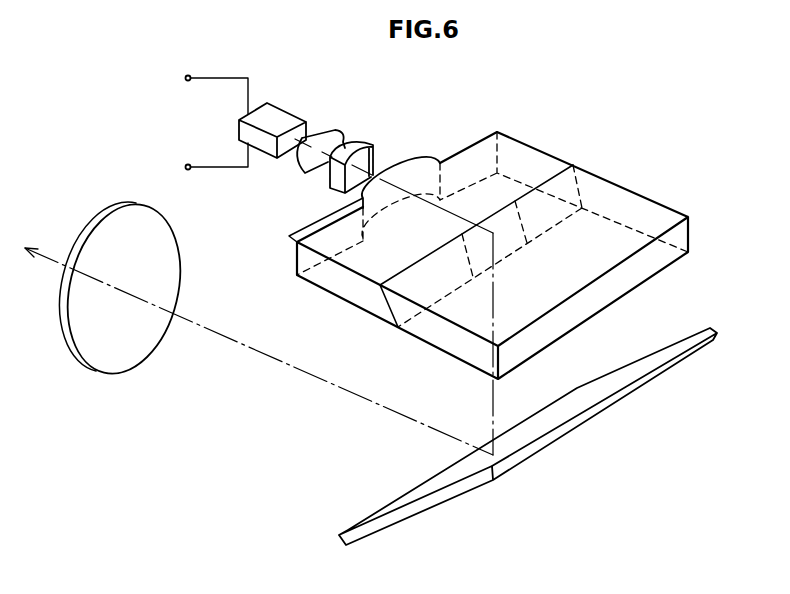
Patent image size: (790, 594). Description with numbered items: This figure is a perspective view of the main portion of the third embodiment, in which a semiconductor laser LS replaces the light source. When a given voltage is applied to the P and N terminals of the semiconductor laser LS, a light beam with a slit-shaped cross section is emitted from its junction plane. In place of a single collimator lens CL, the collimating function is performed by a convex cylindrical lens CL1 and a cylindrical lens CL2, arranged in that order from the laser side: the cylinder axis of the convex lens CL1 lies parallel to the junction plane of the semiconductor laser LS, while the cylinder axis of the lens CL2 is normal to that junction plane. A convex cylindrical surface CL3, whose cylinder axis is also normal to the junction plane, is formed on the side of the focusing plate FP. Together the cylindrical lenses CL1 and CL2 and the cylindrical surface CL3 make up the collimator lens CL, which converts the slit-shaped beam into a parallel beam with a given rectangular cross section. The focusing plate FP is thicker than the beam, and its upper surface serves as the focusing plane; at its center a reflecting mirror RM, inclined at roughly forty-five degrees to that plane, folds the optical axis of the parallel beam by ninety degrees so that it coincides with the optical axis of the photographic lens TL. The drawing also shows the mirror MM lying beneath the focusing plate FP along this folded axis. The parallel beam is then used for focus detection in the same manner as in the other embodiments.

The semiconductor laser LS is at (280, 118).
The convex cylindrical lens CL1 is at (302, 170).
The cylindrical lens CL2 is at (330, 178).
The convex cylindrical surface CL3 is at (290, 236).
The collimator lens CL is at (437, 160).
The focusing plate FP is at (538, 150).
The reflecting mirror RM is at (510, 240).
The main mirror MM is at (627, 366).
The photographic lens TL is at (77, 362).